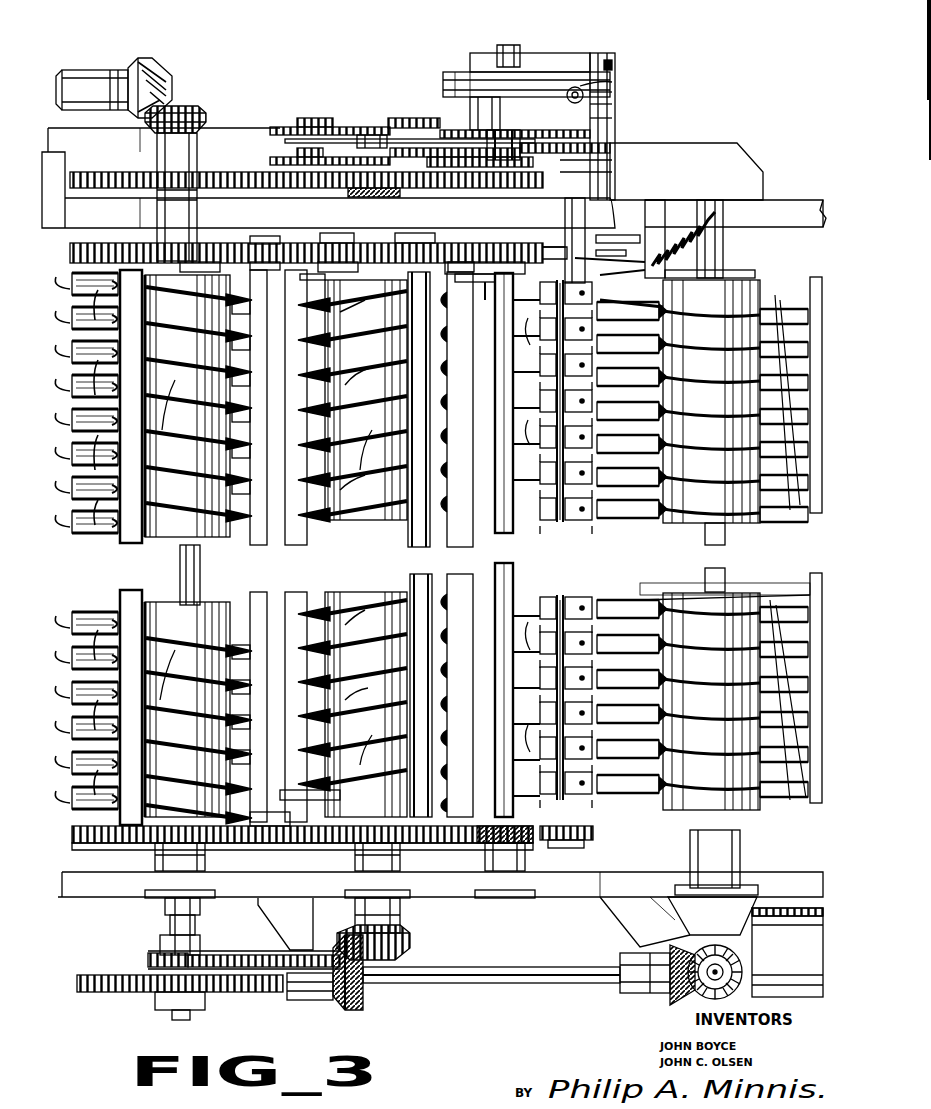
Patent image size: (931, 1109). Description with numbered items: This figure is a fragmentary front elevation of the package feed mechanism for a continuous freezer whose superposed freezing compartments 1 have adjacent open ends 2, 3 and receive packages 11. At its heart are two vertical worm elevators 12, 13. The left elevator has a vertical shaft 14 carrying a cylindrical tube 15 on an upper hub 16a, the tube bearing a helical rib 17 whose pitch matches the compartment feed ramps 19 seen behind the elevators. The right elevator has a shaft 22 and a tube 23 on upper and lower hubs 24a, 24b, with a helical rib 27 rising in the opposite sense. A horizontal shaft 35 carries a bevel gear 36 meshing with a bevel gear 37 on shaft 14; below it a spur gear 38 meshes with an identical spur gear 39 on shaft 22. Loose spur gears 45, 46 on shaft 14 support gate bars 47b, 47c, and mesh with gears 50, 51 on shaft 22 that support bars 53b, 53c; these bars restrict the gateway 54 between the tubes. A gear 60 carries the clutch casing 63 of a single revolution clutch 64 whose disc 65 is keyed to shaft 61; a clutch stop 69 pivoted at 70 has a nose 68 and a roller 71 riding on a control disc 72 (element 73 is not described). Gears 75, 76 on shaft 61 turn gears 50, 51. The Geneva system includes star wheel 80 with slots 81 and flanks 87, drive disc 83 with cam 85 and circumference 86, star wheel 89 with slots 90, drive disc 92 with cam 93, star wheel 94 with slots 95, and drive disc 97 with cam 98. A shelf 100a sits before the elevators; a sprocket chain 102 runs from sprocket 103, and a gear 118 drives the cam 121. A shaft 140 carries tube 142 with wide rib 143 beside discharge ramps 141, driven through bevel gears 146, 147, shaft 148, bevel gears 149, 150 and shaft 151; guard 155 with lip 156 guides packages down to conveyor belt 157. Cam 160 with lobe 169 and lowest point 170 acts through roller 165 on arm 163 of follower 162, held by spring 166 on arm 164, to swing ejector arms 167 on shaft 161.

The freezing compartment 1 is at (81, 556).
The open end 2 is at (81, 522).
The open end 3 is at (534, 532).
The package 11 is at (425, 536).
The worm elevator 12 is at (205, 600).
The worm elevator 13 is at (345, 590).
The vertical shaft 14 is at (175, 600).
The cylindrical tube 15 is at (198, 549).
The upper hub 16a is at (188, 268).
The helical rib 17 is at (169, 534).
The feed ramp 19 is at (355, 500).
The vertical shaft 22 is at (386, 118).
The cylindrical tube 23 is at (352, 548).
The upper hub 24a is at (362, 268).
The lower hub 24b is at (340, 840).
The helical rib 27 is at (369, 586).
The horizontal shaft 35 is at (72, 72).
The bevel gear 36 is at (150, 66).
The bevel gear 37 is at (190, 108).
The spur gear 38 is at (97, 175).
The spur gear 39 is at (292, 198).
The spur gear 45 is at (90, 246).
The spur gear 46 is at (88, 828).
The vertical bar 47b is at (258, 592).
The vertical bar 47c is at (128, 575).
The spur gear 50 is at (408, 256).
The spur gear 51 is at (430, 838).
The vertical bar 53b is at (295, 592).
The vertical bar 53c is at (455, 556).
The gateway 54 is at (270, 240).
The spur gear 60 is at (600, 155).
The vertical shaft 61 is at (512, 540).
The clutch casing 63 is at (470, 110).
The single revolution clutch 64 is at (465, 72).
The disc 65 is at (528, 55).
The nose 68 is at (566, 55).
The clutch stop 69 is at (612, 82).
The pivot 70 is at (612, 62).
The roller 71 is at (615, 92).
The clutch control disc 72 is at (615, 108).
The roller 73 is at (567, 96).
The spur gear 75 is at (570, 246).
The spur gear 76 is at (540, 845).
The star wheel 80 is at (615, 124).
The radial slot 81 is at (500, 120).
The drive disc 83 is at (285, 126).
The cam 85 is at (390, 118).
The circular circumference 86 is at (318, 118).
The arched flank 87 is at (445, 130).
The star wheel 89 is at (285, 140).
The radial slot 90 is at (372, 135).
The drive disc 92 is at (615, 152).
The locking cam 93 is at (615, 168).
The star wheel 94 is at (615, 182).
The radial slot 95 is at (525, 160).
The drive disc 97 is at (270, 162).
The locking cam 98 is at (297, 154).
The shelf 100a is at (335, 795).
The sprocket chain 102 is at (236, 958).
The sprocket 103 is at (152, 952).
The gear 118 is at (118, 1000).
The cam 121 is at (88, 536).
The vertical shaft 140 is at (723, 246).
The discharge ramp 141 is at (540, 290).
The cylindrical tube 142 is at (702, 401).
The helical rib 143 is at (784, 360).
The bevel gear 146 is at (410, 942).
The bevel gear 147 is at (345, 1010).
The horizontal shaft 148 is at (580, 985).
The bevel gear 149 is at (668, 1000).
The bevel gear 150 is at (750, 958).
The horizontal shaft 151 is at (715, 972).
The guard 155 is at (785, 592).
The lip 156 is at (812, 278).
The conveyor belt 157 is at (800, 900).
The cam 160 is at (470, 278).
The vertical shaft 161 is at (582, 550).
The cam follower 162 is at (575, 258).
The arm 163 is at (480, 290).
The arm 164 is at (612, 302).
The roller 165 is at (562, 240).
The coil spring 166 is at (682, 226).
The ejector arm 167 is at (604, 796).
The lobe 169 is at (450, 262).
The lowest point 170 is at (490, 296).